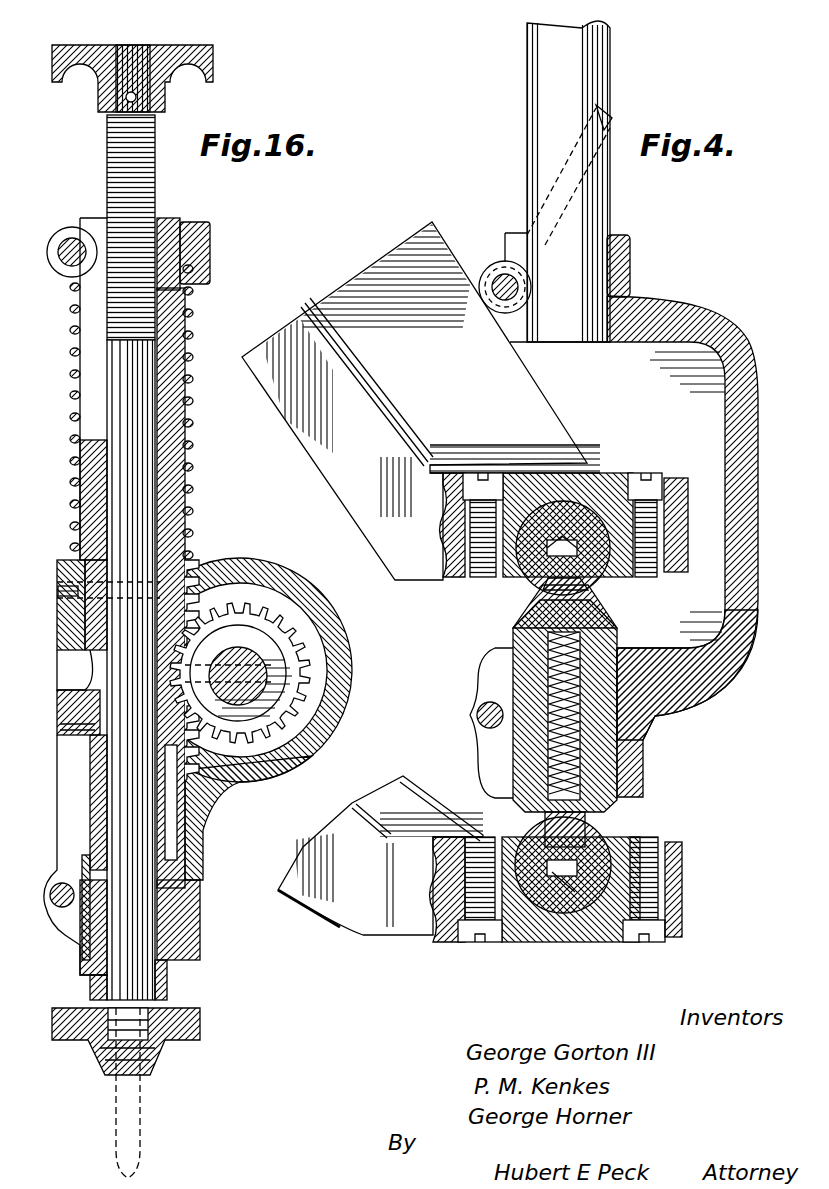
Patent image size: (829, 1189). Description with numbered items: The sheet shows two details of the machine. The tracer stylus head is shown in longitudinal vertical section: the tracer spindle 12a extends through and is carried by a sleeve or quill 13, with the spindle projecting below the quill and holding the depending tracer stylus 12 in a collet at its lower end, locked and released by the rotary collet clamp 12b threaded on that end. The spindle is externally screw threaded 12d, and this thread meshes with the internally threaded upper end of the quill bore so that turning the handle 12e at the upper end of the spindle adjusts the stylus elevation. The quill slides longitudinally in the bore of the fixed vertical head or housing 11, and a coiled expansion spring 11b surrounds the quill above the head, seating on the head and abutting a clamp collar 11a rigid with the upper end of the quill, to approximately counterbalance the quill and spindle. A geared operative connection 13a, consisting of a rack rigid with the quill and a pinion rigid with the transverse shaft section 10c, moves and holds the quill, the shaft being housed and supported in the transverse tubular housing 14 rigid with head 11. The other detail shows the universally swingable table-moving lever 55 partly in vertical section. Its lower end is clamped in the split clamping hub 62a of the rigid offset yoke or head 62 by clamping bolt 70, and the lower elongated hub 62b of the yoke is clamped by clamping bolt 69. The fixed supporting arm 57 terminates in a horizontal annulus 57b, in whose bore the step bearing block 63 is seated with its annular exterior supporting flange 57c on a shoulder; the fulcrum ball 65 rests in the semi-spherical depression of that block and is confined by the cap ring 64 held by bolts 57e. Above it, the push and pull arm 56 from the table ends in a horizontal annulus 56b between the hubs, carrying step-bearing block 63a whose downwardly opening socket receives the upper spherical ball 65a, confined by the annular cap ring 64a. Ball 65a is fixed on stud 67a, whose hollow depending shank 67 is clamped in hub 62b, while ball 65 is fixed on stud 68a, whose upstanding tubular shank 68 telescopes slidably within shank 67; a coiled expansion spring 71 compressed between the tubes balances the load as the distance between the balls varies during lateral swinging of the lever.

In FIG. 16, the transverse shaft section 10c is at (255, 695).
In FIG. 16, the fixed vertical head or housing 11 is at (203, 860).
In FIG. 16, the clamp collar 11a is at (72, 237).
In FIG. 16, the coiled expansion spring 11b is at (72, 325).
In FIG. 16, the tracer stylus 12 is at (141, 1095).
In FIG. 16, the tracer spindle 12a is at (156, 180).
In FIG. 16, the rotary collet clamp 12b is at (202, 1023).
In FIG. 16, the spindle screw thread 12d is at (162, 200).
In FIG. 16, the handle 12e is at (214, 66).
In FIG. 16, the sleeve or quill 13 is at (182, 380).
In FIG. 16, the geared operative connection 13a is at (265, 612).
In FIG. 16, the transverse horizontal tubular case or housing 14 is at (248, 540).
In FIG. 4, the lever 55 is at (592, 80).
In FIG. 4, the push and pull arm 56 is at (316, 450).
In FIG. 4, the horizontal annulus 56b is at (692, 505).
In FIG. 4, the supporting arm 57 is at (376, 932).
In FIG. 4, the horizontal annulus 57b is at (684, 878).
In FIG. 4, the annular exterior supporting flange 57c is at (447, 940).
In FIG. 4, the bolts 57e is at (470, 942).
In FIG. 4, the end yoke, head or extension 62 is at (760, 455).
In FIG. 4, the split clamping hub 62a is at (508, 240).
In FIG. 4, the elongated hub 62b is at (512, 648).
In FIG. 4, the step bearing block 63 is at (586, 935).
In FIG. 4, the step-bearing block 63a is at (537, 470).
In FIG. 4, the cap ring 64 is at (507, 838).
In FIG. 4, the annular cap ring 64a is at (500, 580).
In FIG. 4, the ball 65 is at (602, 832).
In FIG. 4, the spherical ball 65a is at (582, 512).
In FIG. 4, the shank 67 is at (660, 675).
In FIG. 4, the stud 67a is at (596, 598).
In FIG. 4, the shank 68 is at (590, 712).
In FIG. 4, the stud 68a is at (556, 880).
In FIG. 4, the clamping bolt 69 is at (483, 710).
In FIG. 4, the clamping bolt 70 is at (497, 300).
In FIG. 4, the coiled expansion spring 71 is at (520, 640).